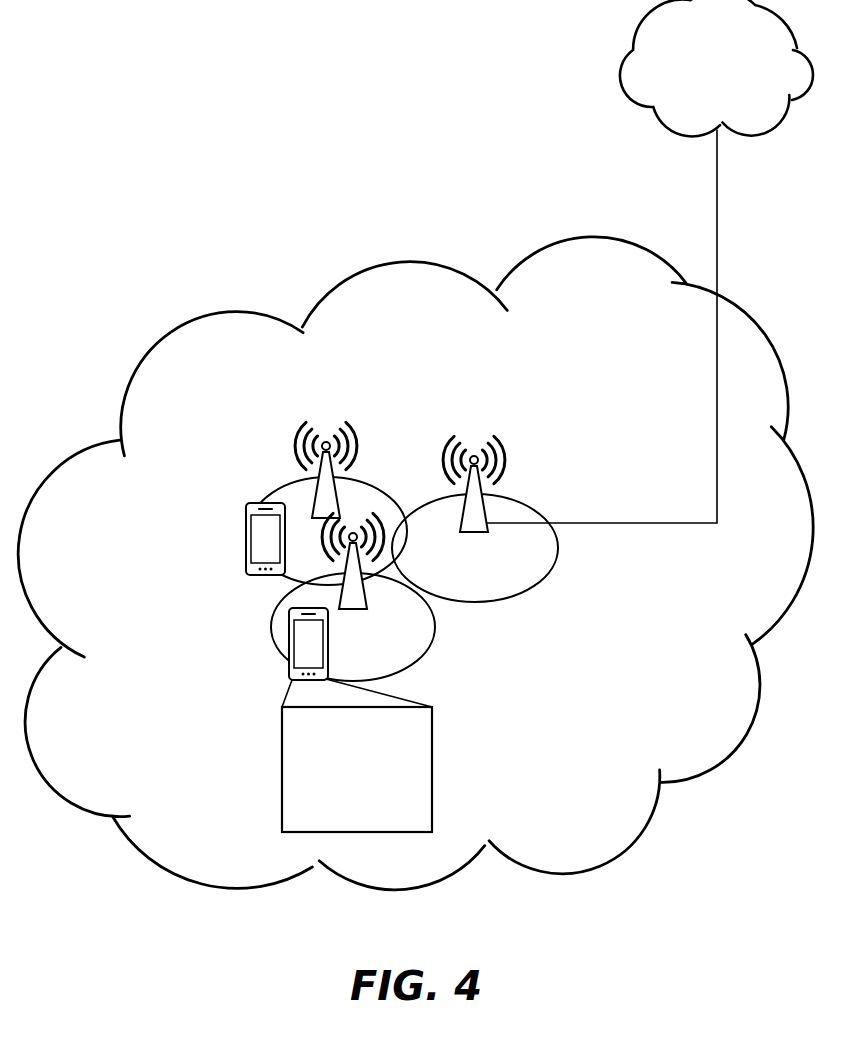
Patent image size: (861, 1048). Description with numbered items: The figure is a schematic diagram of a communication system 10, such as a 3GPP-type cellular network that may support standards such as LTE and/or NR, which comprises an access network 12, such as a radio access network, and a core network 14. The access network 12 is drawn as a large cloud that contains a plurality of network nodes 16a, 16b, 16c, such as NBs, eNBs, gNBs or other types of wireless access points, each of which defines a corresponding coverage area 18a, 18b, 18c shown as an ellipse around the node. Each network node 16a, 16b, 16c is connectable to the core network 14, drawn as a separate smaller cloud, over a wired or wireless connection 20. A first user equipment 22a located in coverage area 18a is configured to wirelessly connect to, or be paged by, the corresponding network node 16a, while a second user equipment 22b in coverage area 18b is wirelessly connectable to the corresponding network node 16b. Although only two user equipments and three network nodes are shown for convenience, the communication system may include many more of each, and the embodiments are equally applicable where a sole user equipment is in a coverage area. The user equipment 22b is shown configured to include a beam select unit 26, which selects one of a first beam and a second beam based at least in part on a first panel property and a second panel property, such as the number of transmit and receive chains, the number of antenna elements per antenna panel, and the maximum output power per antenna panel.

The communication system 10 is at (203, 81).
The access network 12 is at (598, 343).
The core network 14 is at (727, 80).
The network node 16a is at (300, 462).
The network node 16b is at (358, 615).
The network node 16c is at (505, 470).
The coverage area 18a is at (283, 490).
The coverage area 18b is at (275, 620).
The coverage area 18c is at (523, 594).
The connection 20 is at (677, 525).
The user equipment 22a is at (246, 552).
The user equipment 22b is at (289, 672).
The beam select unit 26 is at (371, 816).